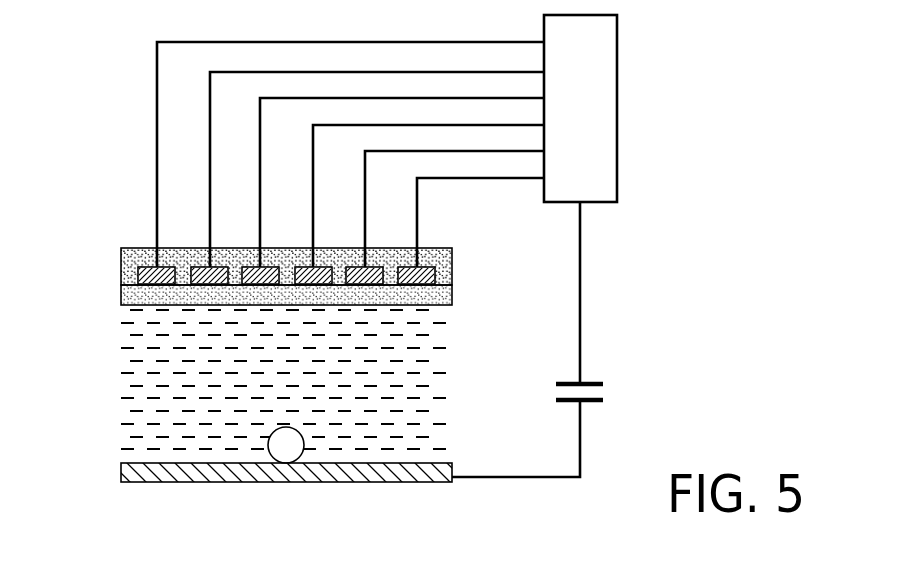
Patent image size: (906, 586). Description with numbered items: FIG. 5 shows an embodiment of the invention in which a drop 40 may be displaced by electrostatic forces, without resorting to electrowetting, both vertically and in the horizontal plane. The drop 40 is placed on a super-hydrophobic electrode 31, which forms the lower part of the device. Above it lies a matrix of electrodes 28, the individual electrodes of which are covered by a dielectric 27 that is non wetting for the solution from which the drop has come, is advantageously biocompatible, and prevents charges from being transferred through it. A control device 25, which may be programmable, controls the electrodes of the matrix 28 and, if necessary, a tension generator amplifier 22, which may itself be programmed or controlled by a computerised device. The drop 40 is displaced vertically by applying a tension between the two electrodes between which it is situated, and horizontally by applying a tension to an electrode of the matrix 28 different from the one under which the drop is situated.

The control device 25 is at (611, 131).
The tension generator amplifier 22 is at (597, 384).
The matrix of electrodes 28 is at (115, 271).
The dielectric 27 is at (121, 297).
The super-hydrophobic electrode 31 is at (121, 468).
The drop 40 is at (289, 449).